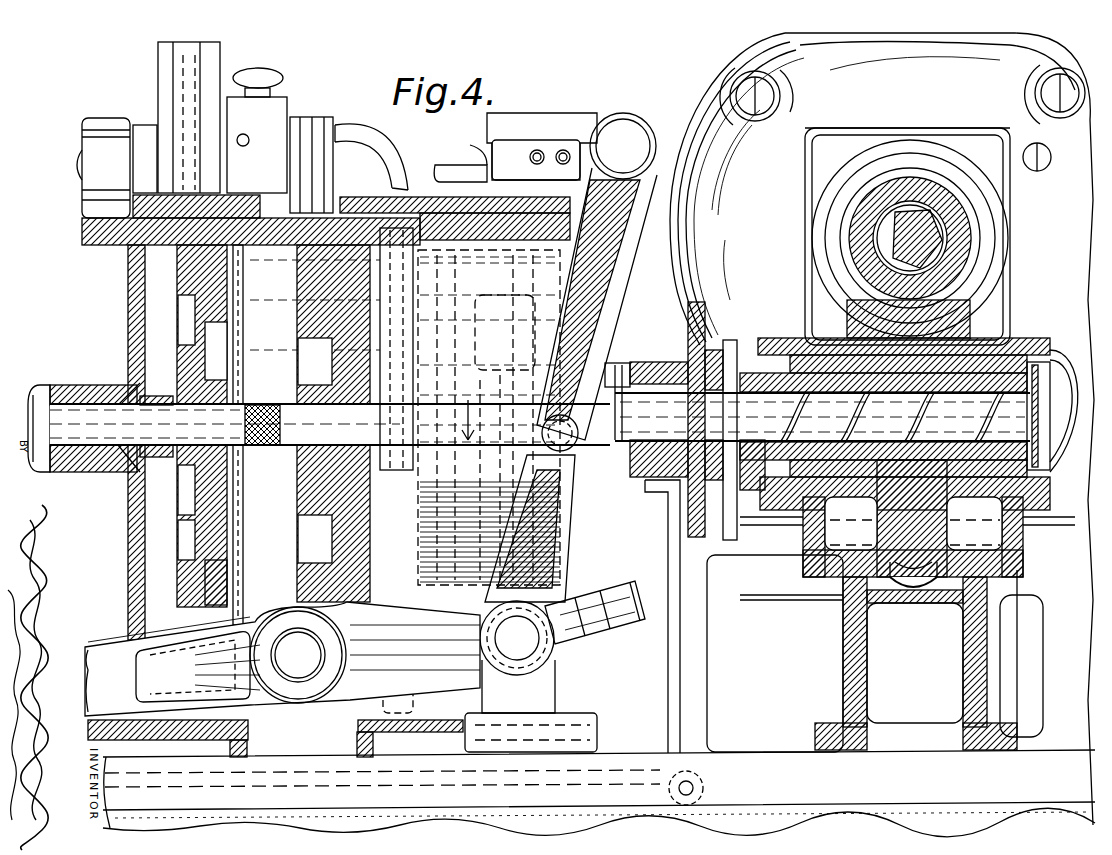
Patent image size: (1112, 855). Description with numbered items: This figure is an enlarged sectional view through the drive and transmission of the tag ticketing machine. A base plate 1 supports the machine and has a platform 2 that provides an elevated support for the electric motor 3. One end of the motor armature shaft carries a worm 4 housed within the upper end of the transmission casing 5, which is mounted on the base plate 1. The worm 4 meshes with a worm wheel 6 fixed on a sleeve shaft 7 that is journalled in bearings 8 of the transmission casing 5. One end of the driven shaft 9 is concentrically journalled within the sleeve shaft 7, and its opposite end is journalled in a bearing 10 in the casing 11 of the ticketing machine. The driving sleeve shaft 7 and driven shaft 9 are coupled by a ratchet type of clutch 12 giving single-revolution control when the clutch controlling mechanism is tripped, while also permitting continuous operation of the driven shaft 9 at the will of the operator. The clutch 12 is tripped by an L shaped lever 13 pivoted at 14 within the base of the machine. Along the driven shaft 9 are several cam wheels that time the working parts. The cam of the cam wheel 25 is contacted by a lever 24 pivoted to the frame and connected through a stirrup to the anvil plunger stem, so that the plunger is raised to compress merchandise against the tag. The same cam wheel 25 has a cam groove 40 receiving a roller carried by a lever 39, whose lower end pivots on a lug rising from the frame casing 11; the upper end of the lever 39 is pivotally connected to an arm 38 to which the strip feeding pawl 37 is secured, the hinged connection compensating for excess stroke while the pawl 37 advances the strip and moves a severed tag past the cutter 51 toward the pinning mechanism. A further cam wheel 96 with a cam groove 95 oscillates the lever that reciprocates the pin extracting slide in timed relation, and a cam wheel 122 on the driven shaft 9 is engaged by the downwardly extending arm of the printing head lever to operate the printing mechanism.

The base plate 1 is at (175, 785).
The platform 2 is at (882, 429).
The electric motor 3 is at (902, 118).
The worm 4 is at (882, 242).
The transmission casing 5 is at (960, 282).
The worm wheel 6 is at (914, 590).
The sleeve shaft 7 is at (1040, 362).
The bearings 8 is at (800, 338).
The driven shaft 9 is at (83, 402).
The bearing 10 is at (93, 470).
The casing 11 is at (128, 548).
The ratchet type of clutch 12 is at (705, 378).
The L shaped lever 13 is at (690, 566).
The pivot 14 is at (696, 783).
The lever 24 is at (282, 679).
The cam wheel 25 is at (604, 582).
The strip feeding pawl 37 is at (455, 180).
The arm 38 is at (553, 115).
The lever 39 is at (571, 357).
The cam groove 40 is at (540, 305).
The cutter 51 is at (248, 172).
The cam groove 95 is at (183, 325).
The cam wheel 96 is at (182, 583).
The cam wheel 122 is at (305, 505).